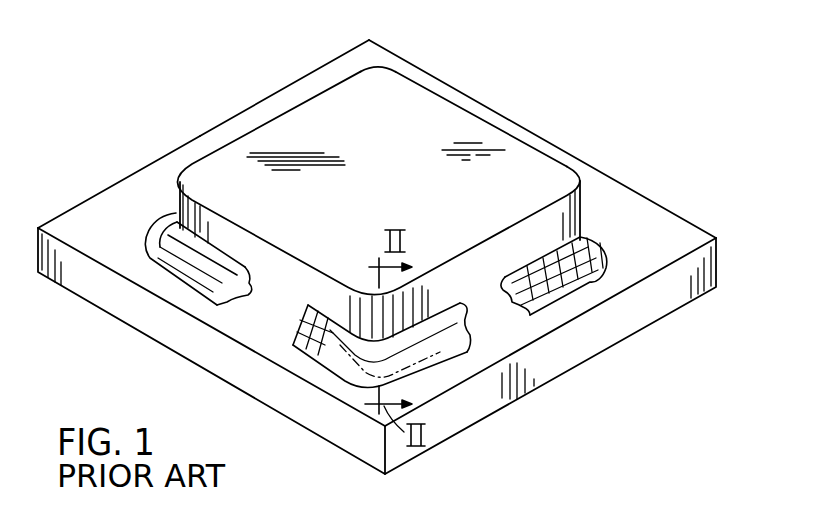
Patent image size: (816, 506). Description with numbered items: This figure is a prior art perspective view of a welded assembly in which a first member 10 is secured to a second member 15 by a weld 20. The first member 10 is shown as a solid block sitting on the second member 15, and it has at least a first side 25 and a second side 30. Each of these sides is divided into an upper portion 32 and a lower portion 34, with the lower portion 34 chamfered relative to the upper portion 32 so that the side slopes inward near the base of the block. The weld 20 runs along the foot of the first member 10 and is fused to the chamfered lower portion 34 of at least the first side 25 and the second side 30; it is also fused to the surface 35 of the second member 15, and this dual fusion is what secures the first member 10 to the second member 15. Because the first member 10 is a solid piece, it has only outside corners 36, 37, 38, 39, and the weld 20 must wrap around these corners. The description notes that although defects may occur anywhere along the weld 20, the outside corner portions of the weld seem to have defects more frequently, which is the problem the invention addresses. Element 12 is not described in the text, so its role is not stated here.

The first member 10 is at (386, 137).
The top surface of chip 12 is at (400, 80).
The second member 15 is at (377, 257).
The weld 20 is at (601, 238).
The first side 25 is at (505, 248).
The second side 30 is at (267, 263).
The upper portion 32 is at (310, 286).
The lower portion 34 is at (280, 312).
The surface 35 is at (220, 125).
The outside corner 36 is at (335, 350).
The outside corner 37 is at (143, 168).
The outside corner 38 is at (376, 65).
The outside corner 39 is at (597, 170).